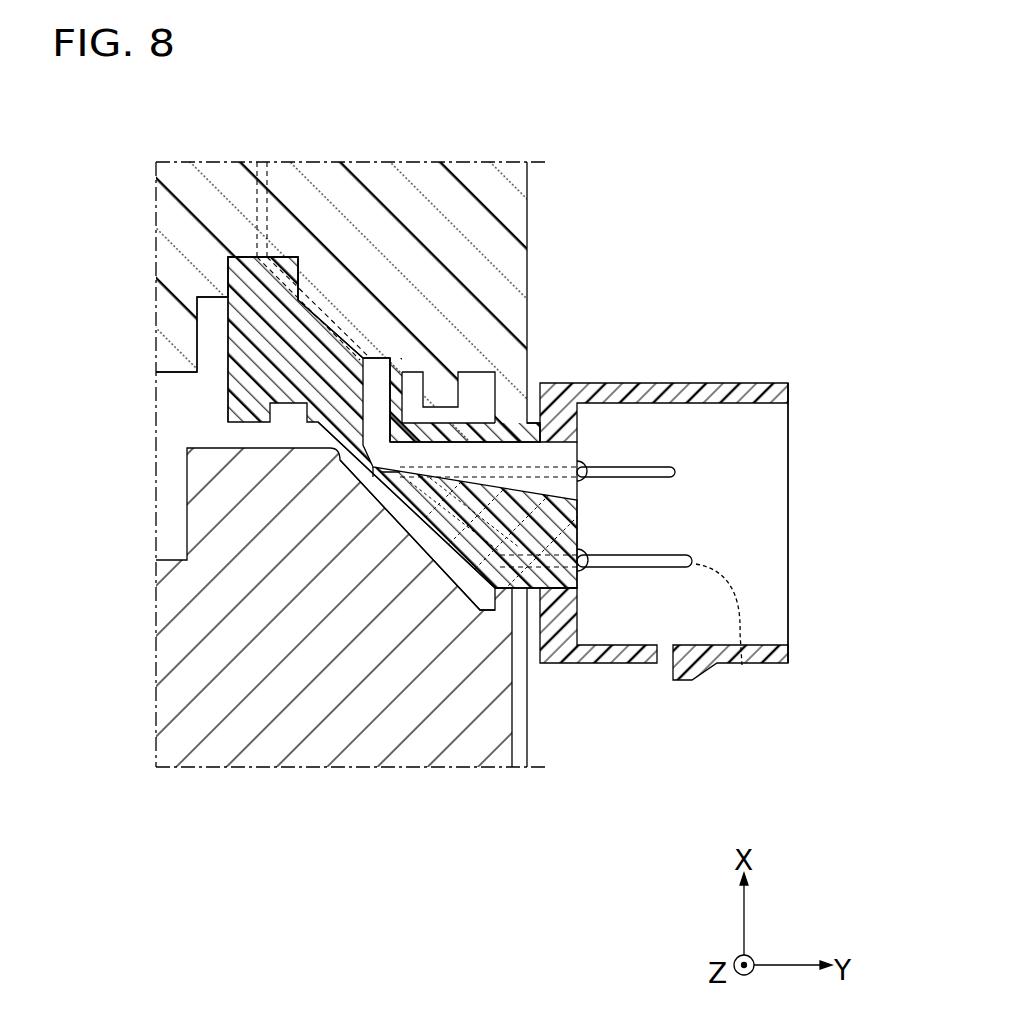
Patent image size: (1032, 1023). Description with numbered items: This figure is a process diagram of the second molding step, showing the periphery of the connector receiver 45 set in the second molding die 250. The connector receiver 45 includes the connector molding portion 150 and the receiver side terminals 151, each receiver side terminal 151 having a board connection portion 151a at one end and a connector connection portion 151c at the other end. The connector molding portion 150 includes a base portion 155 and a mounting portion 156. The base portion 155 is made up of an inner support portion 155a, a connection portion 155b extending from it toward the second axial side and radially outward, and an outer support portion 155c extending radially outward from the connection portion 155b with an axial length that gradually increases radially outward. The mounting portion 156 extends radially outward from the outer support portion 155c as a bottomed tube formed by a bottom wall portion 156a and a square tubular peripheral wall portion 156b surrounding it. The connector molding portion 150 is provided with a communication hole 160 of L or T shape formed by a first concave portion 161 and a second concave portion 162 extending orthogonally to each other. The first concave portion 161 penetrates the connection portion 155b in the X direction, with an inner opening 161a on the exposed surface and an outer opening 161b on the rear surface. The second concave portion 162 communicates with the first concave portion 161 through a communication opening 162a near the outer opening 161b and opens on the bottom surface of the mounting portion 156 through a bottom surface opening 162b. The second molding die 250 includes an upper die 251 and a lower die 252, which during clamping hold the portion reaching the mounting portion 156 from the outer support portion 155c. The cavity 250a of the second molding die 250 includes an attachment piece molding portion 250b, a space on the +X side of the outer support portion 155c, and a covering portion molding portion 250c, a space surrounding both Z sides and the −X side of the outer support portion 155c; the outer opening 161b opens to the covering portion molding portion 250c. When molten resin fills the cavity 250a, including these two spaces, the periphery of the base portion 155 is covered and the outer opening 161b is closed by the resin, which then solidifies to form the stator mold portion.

The connector receiver 45 is at (791, 385).
The connector molding portion 150 is at (793, 590).
The receiver side terminal 151 is at (257, 190).
The board connection portion 151a is at (270, 198).
The connector connection portion 151c is at (742, 665).
The base portion 155 is at (398, 478).
The inner support portion 155a is at (227, 310).
The connection portion 155b is at (336, 438).
The outer support portion 155c is at (535, 590).
The mounting portion 156 is at (723, 385).
The bottom wall portion 156a is at (570, 620).
The peripheral wall portion 156b is at (657, 648).
The communication hole 160 is at (474, 405).
The first concave portion 161 is at (405, 368).
The inner opening 161a is at (385, 356).
The outer opening 161b is at (352, 452).
The second concave portion 162 is at (550, 416).
The communication opening 162a is at (378, 470).
The bottom surface opening 162b is at (582, 490).
The second molding die 250 is at (530, 196).
The cavity 250a is at (205, 409).
The attachment piece molding portion 250b is at (502, 428).
The covering portion molding portion 250c is at (468, 598).
The upper die 251 is at (198, 234).
The lower die 252 is at (203, 700).